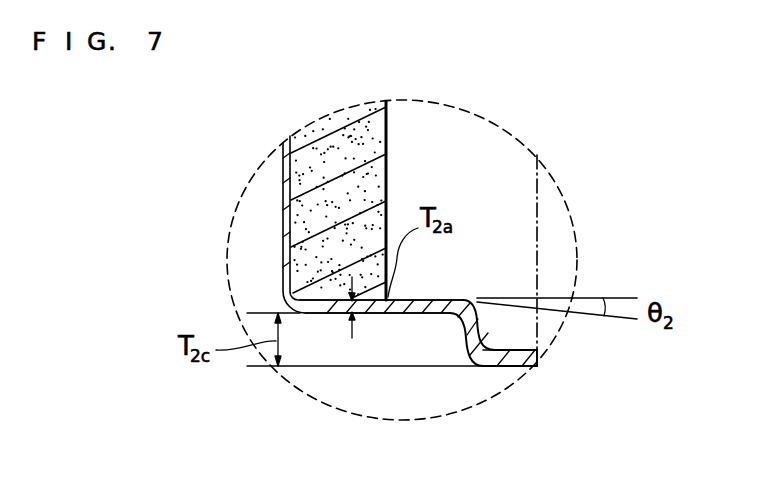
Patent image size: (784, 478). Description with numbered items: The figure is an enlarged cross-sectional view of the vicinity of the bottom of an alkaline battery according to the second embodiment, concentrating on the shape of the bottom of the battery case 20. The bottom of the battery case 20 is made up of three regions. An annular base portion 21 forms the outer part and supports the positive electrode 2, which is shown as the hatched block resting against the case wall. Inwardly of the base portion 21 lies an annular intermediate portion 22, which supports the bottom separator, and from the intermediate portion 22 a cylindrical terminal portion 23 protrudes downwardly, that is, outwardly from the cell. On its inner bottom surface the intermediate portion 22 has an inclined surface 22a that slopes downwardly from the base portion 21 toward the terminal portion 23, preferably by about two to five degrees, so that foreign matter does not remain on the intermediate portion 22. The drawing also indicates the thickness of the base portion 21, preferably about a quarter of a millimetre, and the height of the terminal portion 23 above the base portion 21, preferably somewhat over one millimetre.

The positive electrode 2 is at (307, 225).
The battery case 20 is at (283, 192).
The base portion 21 is at (340, 313).
The intermediate portion 22 is at (416, 313).
The inclined surface 22a is at (432, 300).
The terminal portion 23 is at (508, 362).